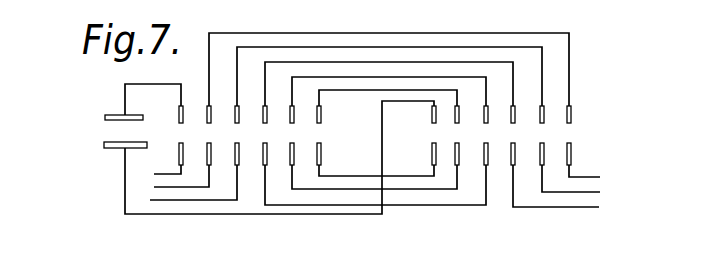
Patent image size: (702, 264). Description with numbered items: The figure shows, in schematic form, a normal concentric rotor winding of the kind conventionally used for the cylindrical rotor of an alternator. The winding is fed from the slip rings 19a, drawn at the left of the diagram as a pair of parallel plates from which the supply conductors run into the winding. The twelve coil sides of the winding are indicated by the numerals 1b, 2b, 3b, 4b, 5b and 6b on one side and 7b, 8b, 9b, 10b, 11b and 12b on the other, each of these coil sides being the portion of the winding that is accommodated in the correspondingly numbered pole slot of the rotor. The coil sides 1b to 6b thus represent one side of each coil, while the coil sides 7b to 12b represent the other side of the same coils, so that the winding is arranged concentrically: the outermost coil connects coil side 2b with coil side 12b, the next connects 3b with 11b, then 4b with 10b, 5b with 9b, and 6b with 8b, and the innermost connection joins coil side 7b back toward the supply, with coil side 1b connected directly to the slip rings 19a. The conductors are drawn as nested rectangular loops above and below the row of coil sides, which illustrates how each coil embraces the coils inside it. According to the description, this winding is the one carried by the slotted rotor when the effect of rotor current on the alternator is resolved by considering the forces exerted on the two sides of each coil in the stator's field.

The coil side 1b is at (183, 132).
The coil side 2b is at (211, 132).
The coil side 3b is at (239, 132).
The coil side 4b is at (270, 132).
The coil side 5b is at (294, 132).
The coil side 6b is at (321, 132).
The coil side 7b is at (436, 132).
The coil side 8b is at (459, 132).
The coil side 9b is at (488, 132).
The coil side 10b is at (515, 132).
The coil side 11b is at (544, 132).
The coil side 12b is at (571, 132).
The slip rings 19a is at (108, 123).